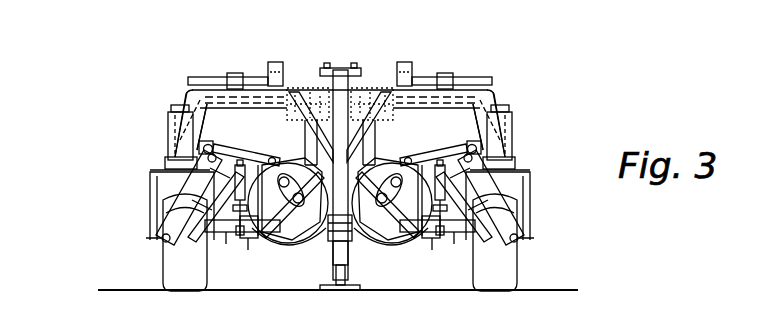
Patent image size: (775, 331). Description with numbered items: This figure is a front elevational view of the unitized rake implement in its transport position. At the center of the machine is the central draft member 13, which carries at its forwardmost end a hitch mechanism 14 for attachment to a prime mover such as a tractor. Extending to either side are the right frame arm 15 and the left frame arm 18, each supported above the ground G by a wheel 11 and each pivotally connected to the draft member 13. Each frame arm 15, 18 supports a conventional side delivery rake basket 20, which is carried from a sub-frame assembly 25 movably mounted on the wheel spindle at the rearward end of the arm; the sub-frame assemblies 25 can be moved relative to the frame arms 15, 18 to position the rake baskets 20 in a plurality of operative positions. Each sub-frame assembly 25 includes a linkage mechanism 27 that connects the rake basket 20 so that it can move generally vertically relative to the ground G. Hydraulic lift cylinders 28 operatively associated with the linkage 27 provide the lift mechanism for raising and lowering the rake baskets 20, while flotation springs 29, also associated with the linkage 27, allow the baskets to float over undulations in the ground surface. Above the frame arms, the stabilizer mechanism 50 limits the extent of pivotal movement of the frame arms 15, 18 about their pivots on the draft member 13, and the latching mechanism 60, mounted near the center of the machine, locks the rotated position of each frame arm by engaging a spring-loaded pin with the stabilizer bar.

The wheel 11 is at (166, 266).
The central draft member 13 is at (365, 127).
The hitch mechanism 14 is at (350, 252).
The right frame arm 15 is at (190, 97).
The left frame arm 18 is at (490, 97).
The side delivery rake basket 20 is at (318, 236).
The sub-frame assembly 25 is at (172, 133).
The linkage mechanism 27 is at (238, 150).
The hydraulic lift cylinder 28 is at (157, 186).
The flotation spring 29 is at (238, 236).
The stabilizer mechanism 50 is at (263, 44).
The latching mechanism 60 is at (399, 62).
The ground G is at (571, 289).